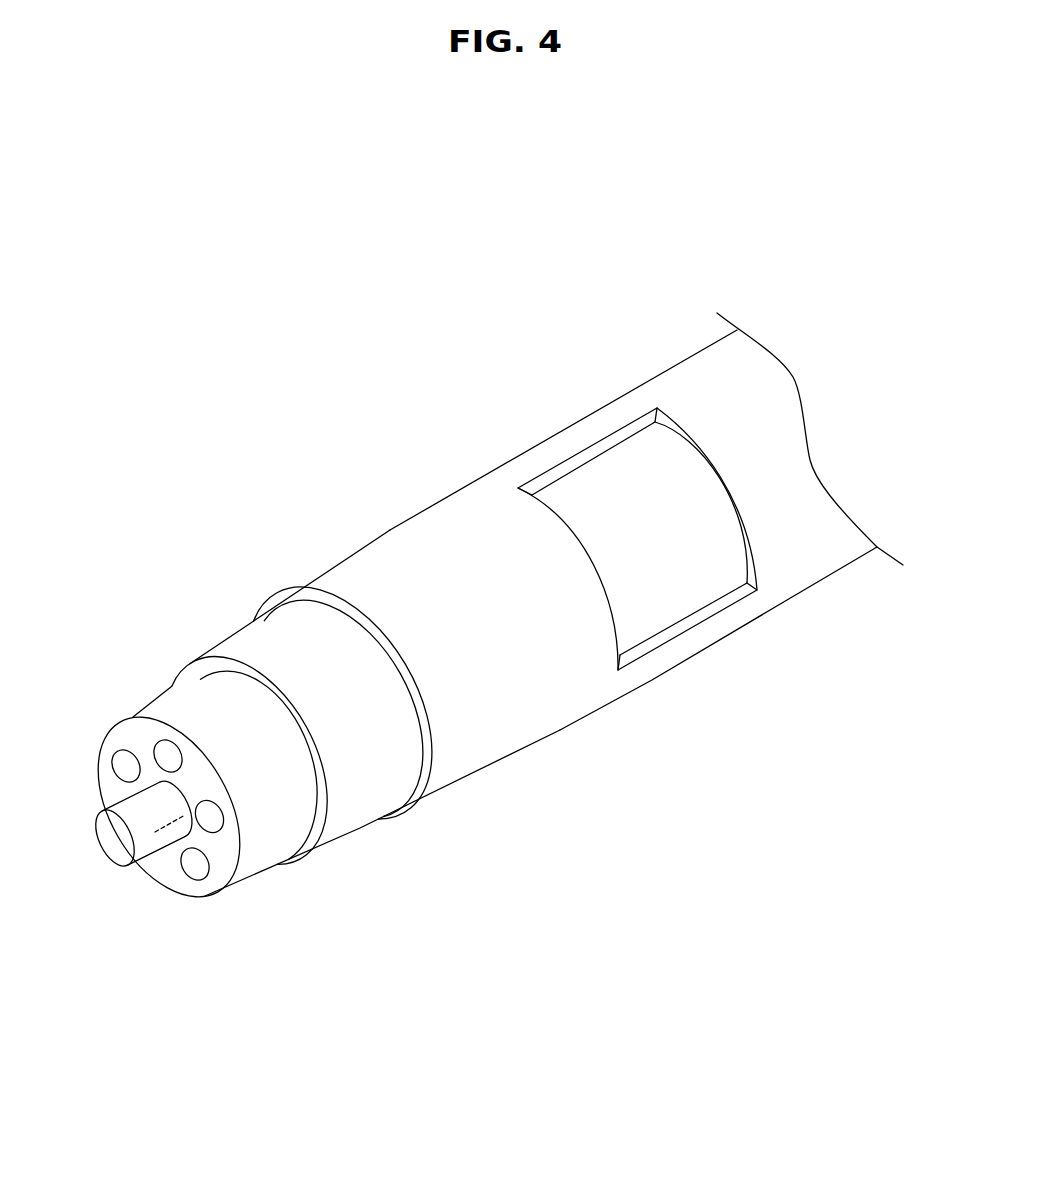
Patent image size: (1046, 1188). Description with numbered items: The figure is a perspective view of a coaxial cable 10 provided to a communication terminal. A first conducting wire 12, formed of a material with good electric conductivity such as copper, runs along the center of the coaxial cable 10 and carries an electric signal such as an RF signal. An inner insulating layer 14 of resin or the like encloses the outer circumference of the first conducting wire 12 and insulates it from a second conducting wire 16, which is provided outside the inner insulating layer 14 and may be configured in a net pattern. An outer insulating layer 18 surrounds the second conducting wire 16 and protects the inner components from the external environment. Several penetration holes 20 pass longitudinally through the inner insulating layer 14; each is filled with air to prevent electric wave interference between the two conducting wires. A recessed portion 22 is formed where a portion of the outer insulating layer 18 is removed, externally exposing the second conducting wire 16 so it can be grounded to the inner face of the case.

The coaxial cable 10 is at (348, 496).
The first conducting wire 12 is at (113, 842).
The inner insulating layer 14 is at (253, 855).
The second conducting wire 16 is at (360, 812).
The outer insulating layer 18 is at (498, 727).
The penetration holes 20 is at (192, 868).
The recessed portion 22 is at (559, 422).